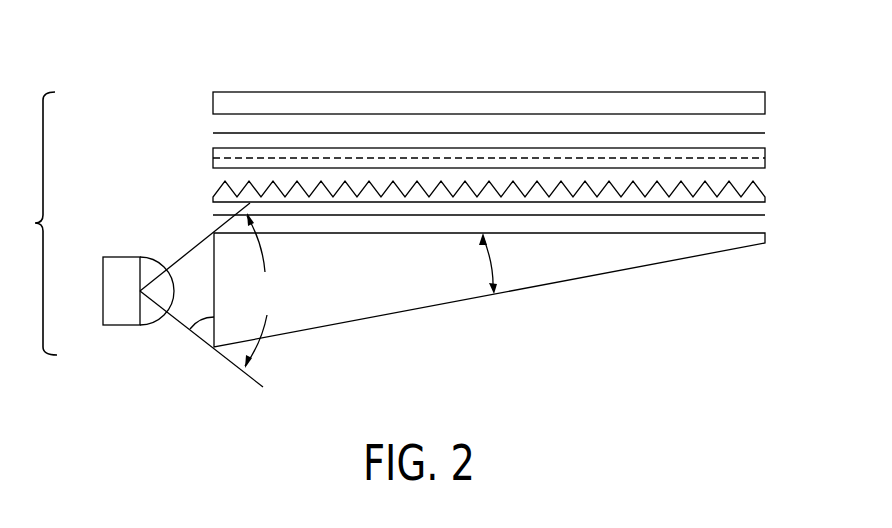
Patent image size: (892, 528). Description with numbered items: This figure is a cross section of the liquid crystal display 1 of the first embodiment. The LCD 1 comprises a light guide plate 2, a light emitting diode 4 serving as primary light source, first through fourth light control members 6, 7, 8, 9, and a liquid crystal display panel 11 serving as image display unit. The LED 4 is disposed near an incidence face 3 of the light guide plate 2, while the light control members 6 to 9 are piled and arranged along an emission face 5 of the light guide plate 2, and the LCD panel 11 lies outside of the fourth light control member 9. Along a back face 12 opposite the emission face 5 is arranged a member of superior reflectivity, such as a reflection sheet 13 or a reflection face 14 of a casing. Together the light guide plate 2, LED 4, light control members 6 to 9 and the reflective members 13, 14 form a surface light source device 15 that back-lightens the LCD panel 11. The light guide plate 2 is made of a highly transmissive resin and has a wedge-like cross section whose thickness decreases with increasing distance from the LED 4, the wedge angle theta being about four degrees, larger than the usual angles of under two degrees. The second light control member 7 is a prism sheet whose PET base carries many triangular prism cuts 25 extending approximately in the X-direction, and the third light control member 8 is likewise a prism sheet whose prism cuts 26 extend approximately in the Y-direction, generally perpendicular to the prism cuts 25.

The liquid crystal display 1 is at (195, 80).
The surface light source device 15 is at (437, 212).
The light guide plate 2 is at (489, 302).
The incidence face 3 is at (192, 338).
The light emitting diode 4 is at (118, 304).
The emission face 5 is at (489, 287).
The first light control member 6 is at (748, 216).
The second light control member 7 is at (509, 131).
The third light control member 8 is at (509, 112).
The fourth light control member 9 is at (756, 131).
The liquid crystal display panel 11 is at (744, 100).
The back face 12 is at (489, 293).
The reflection sheet 13 is at (489, 293).
The reflection face 14 is at (710, 273).
The prism cuts 25 is at (412, 186).
The prism cuts 26 is at (517, 158).